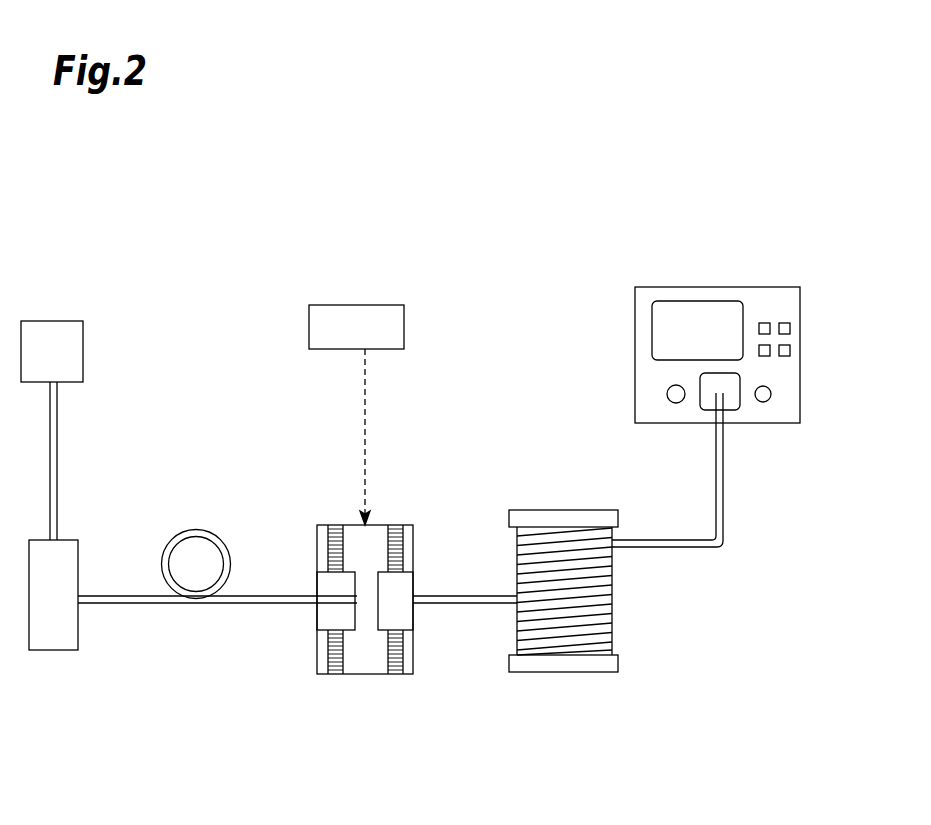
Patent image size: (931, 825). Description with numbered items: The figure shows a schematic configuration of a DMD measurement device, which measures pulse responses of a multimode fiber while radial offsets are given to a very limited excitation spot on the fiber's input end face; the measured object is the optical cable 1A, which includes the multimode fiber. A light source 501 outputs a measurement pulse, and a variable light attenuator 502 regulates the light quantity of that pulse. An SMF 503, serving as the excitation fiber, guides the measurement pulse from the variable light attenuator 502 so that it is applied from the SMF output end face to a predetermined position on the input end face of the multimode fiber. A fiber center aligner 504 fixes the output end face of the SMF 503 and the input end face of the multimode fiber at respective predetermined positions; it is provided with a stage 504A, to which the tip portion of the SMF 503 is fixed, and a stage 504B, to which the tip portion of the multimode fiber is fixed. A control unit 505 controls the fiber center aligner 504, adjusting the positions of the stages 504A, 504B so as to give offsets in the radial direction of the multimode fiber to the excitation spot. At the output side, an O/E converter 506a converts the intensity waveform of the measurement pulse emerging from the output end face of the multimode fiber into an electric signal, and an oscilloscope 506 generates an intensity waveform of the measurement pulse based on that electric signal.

The light source 501 is at (83, 348).
The variable light attenuator 502 is at (67, 650).
The SMF (excitation fiber) 503 is at (267, 593).
The fiber center aligner 504 is at (369, 626).
The stage 504A is at (330, 622).
The stage 504B is at (405, 622).
The control unit 505 is at (404, 319).
The oscilloscope 506 is at (717, 353).
The O/E converter 506a is at (733, 410).
The optical cable 1A is at (633, 635).